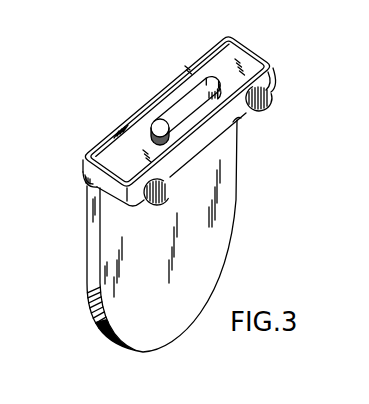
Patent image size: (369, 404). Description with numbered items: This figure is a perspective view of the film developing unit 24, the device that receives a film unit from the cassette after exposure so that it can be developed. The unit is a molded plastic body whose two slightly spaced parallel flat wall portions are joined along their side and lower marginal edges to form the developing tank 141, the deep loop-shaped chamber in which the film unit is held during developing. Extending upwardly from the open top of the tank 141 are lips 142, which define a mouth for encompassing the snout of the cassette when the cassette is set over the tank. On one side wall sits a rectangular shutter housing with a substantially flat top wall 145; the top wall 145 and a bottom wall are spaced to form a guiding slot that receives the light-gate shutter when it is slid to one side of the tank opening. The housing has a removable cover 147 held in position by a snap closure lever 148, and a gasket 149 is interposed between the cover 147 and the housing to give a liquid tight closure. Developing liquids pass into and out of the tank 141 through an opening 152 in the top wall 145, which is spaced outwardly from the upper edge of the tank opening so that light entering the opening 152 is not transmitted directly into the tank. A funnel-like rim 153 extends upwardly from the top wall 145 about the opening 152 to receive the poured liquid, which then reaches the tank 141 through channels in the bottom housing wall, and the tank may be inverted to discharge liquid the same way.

The film developing unit 24 is at (247, 153).
The developing tank 141 is at (116, 307).
The lips 142 is at (156, 97).
The top wall 145 is at (248, 65).
The cover 147 is at (264, 77).
The snap closure lever 148 is at (272, 92).
The gasket 149 is at (125, 185).
The opening 152 is at (197, 100).
The funnel-like rim 153 is at (239, 121).